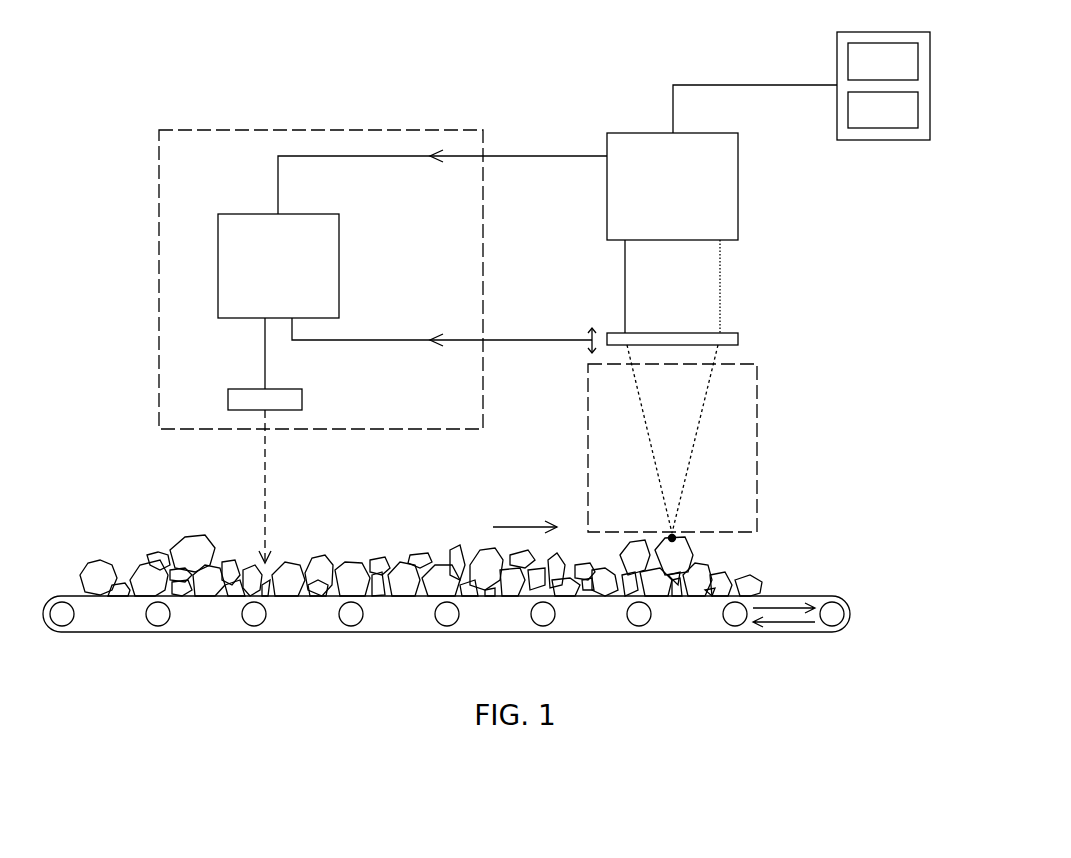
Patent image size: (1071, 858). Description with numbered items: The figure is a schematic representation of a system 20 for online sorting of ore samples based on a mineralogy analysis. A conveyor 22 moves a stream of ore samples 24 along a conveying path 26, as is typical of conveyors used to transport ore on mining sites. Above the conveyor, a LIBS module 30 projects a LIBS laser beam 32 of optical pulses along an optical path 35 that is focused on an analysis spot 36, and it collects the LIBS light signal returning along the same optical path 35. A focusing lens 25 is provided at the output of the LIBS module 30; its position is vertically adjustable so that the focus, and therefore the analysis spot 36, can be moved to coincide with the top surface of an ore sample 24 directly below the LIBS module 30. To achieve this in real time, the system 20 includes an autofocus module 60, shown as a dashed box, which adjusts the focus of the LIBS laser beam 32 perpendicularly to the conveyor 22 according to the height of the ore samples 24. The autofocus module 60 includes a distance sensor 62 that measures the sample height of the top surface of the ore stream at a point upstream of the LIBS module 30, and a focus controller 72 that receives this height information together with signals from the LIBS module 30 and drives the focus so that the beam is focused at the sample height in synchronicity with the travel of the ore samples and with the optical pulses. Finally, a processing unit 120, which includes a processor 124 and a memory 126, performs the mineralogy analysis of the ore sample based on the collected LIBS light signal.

The system 20 is at (577, 72).
The conveyor 22 is at (110, 632).
The ore samples 24 is at (173, 545).
The focusing lens 25 is at (738, 340).
The conveying path 26 is at (520, 527).
The LIBS module 30 is at (738, 152).
The LIBS laser beam 32 is at (712, 286).
The optical path 35 is at (757, 421).
The analysis spot 36 is at (672, 538).
The autofocus module 60 is at (391, 128).
The distance sensor 62 is at (302, 400).
The focus controller 72 is at (339, 266).
The processing unit 120 is at (883, 112).
The processor 124 is at (883, 61).
The memory 126 is at (883, 110).